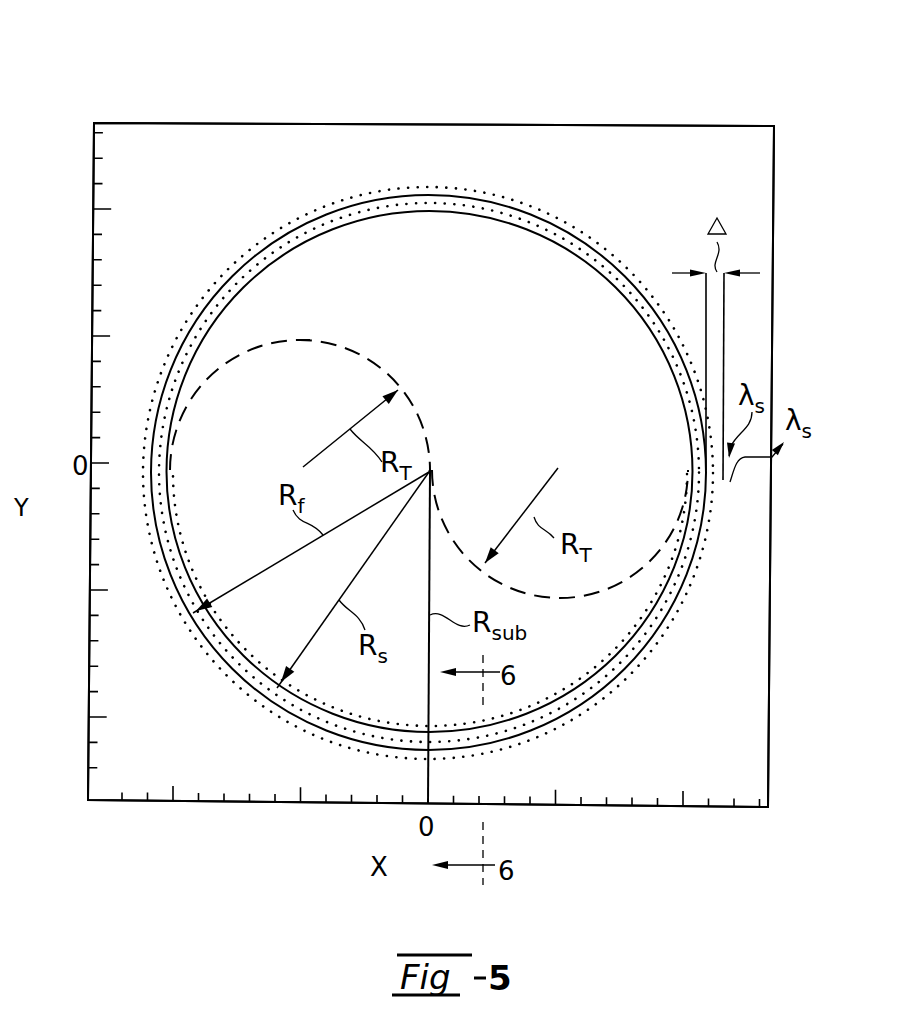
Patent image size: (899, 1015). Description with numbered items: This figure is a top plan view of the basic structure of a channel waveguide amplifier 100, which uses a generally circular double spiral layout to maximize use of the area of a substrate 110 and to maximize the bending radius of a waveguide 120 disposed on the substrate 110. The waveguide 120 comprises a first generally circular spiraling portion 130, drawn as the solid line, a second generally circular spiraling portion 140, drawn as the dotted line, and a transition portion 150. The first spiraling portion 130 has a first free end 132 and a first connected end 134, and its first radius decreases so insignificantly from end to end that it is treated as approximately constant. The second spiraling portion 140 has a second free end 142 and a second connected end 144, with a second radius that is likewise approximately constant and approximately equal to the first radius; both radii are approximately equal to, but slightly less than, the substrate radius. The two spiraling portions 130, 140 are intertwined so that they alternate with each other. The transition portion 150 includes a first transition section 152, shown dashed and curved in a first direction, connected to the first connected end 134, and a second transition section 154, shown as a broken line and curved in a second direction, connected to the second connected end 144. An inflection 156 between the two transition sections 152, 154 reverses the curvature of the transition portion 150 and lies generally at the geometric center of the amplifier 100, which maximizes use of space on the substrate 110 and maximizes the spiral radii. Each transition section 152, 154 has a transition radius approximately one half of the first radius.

The channel waveguide amplifier 100 is at (433, 74).
The substrate 110 is at (662, 125).
The waveguide 120 is at (637, 268).
The first generally circular spiraling portion 130 is at (650, 658).
The first free end 132 is at (724, 498).
The first connected end 134 is at (690, 472).
The second generally circular spiraling portion 140 is at (616, 694).
The second free end 142 is at (712, 548).
The second connected end 144 is at (170, 472).
The transition portion 150 is at (380, 358).
The first transition section 152 is at (670, 545).
The second transition section 154 is at (304, 339).
The inflection 156 is at (431, 472).